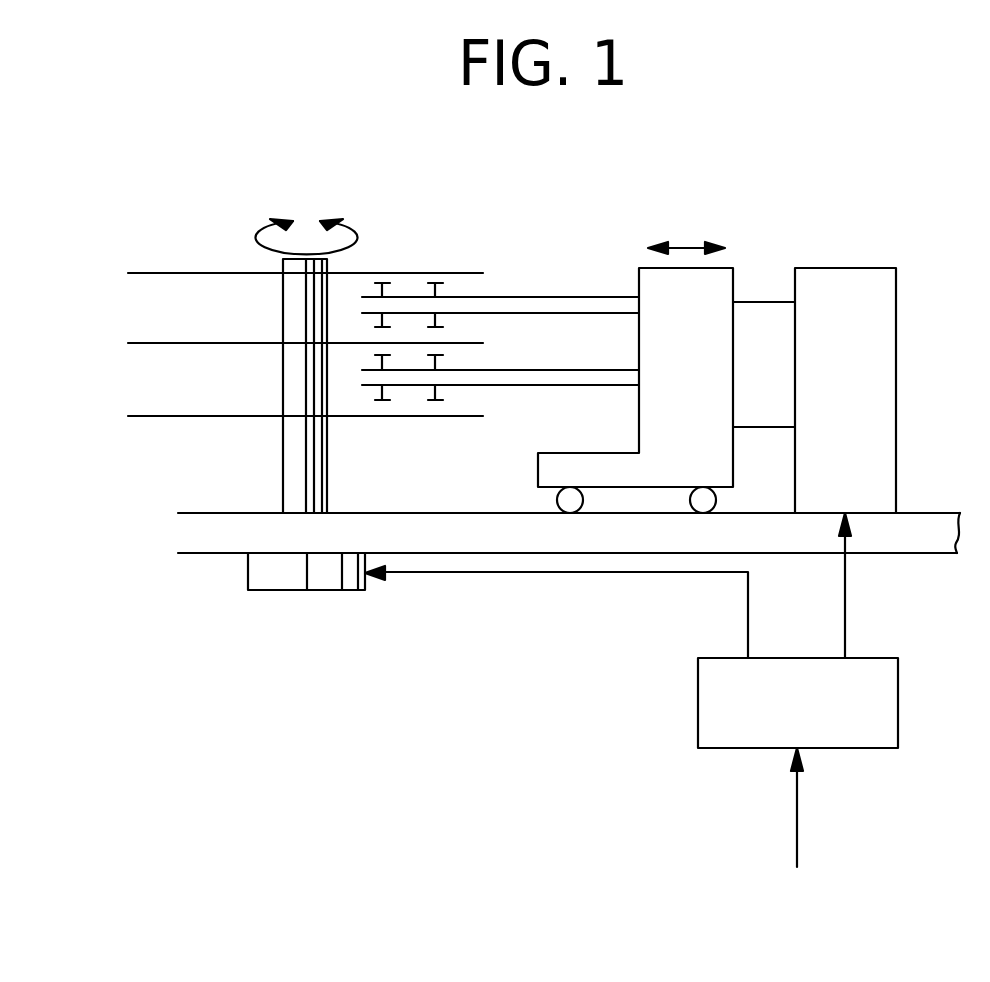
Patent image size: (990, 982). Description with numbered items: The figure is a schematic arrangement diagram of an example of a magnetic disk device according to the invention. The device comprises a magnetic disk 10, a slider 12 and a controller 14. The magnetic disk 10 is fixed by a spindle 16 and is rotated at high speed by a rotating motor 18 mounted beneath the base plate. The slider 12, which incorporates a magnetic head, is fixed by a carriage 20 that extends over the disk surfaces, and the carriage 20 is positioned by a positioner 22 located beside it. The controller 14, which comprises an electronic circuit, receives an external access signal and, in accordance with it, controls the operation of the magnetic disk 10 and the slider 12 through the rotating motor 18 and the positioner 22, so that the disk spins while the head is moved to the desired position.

The magnetic disk 10 is at (200, 271).
The slider 12 is at (380, 280).
The controller 14 is at (870, 657).
The spindle 16 is at (283, 480).
The rotating motor 18 is at (273, 584).
The carriage 20 is at (727, 268).
The positioner 22 is at (873, 267).